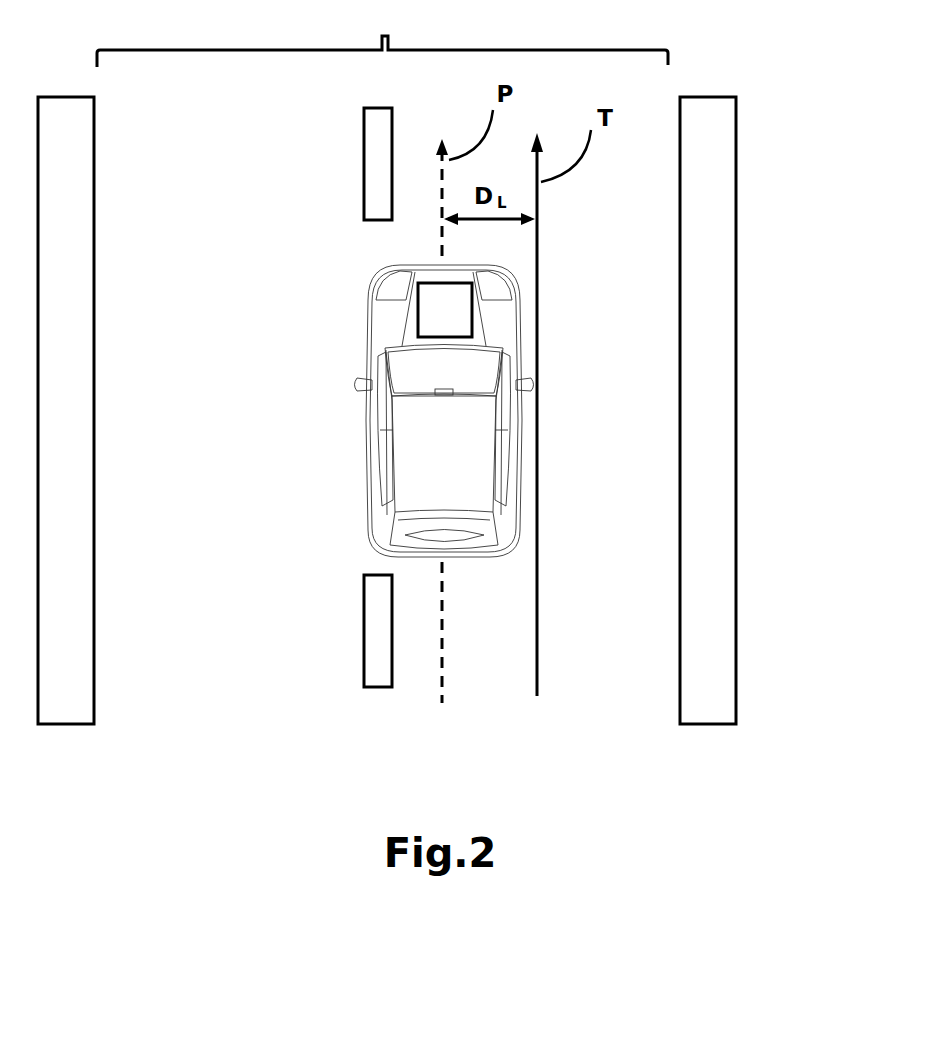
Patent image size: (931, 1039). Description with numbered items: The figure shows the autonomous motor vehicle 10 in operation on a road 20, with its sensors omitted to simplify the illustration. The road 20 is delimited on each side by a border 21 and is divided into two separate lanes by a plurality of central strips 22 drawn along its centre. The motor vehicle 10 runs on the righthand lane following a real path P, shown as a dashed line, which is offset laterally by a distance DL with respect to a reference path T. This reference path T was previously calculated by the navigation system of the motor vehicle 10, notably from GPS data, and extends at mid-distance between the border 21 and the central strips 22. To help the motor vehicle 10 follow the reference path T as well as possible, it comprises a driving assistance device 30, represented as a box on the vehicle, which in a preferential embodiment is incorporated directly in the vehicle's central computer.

The motor vehicle 10 is at (366, 338).
The road 20 is at (382, 33).
The border 21 is at (737, 238).
The central strips 22 is at (378, 197).
The driving assistance device 30 is at (445, 310).